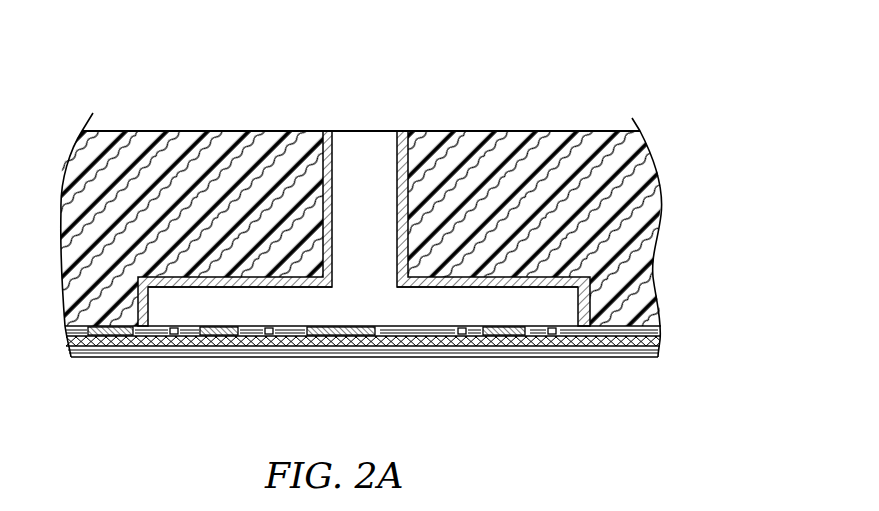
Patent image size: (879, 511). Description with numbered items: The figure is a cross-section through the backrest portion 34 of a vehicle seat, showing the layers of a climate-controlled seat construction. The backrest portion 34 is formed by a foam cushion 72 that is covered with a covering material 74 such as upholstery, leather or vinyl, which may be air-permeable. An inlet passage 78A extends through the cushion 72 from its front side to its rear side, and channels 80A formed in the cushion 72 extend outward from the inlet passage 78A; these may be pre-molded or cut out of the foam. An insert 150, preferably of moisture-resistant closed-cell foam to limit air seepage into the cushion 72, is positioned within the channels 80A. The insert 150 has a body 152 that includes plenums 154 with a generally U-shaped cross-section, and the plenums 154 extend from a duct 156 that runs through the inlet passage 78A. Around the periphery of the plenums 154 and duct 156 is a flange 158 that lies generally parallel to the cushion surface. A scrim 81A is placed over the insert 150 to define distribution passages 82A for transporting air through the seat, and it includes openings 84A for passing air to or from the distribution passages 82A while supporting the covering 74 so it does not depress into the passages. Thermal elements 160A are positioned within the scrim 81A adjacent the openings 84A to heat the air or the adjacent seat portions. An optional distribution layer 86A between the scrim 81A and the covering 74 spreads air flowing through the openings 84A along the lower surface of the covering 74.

The backrest portion 34 is at (193, 82).
The cushion 72 is at (555, 162).
The covering material 74 is at (628, 357).
The inlet passage 78A is at (414, 196).
The channels 80A is at (647, 237).
The scrim 81A is at (417, 347).
The distribution passages 82A is at (250, 316).
The openings 84A is at (180, 347).
The distribution layer 86A is at (325, 347).
The insert 150 is at (493, 150).
The body 152 is at (312, 172).
The plenums 154 is at (582, 237).
The duct 156 is at (332, 131).
The flange 158 is at (625, 300).
The thermal elements 160A is at (112, 356).